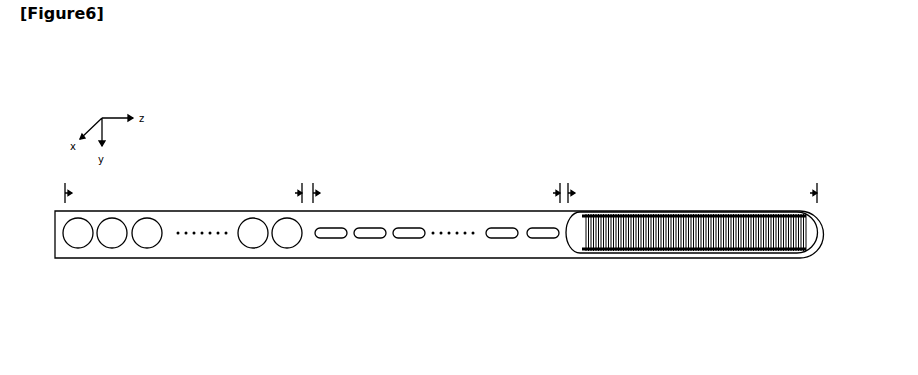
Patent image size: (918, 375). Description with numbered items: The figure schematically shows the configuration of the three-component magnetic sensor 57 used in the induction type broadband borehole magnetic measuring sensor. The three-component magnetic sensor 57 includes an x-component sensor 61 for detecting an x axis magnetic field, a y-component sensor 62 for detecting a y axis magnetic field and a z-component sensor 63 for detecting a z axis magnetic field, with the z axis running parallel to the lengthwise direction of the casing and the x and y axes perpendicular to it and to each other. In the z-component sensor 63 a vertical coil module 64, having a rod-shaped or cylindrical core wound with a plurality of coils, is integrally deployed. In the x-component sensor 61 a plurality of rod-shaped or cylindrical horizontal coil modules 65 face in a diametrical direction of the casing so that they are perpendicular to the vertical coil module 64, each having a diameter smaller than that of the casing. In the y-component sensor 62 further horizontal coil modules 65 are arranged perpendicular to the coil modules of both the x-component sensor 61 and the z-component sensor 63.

The 3-component magnetic sensor 57 is at (527, 115).
The x-component sensor 61 is at (192, 271).
The y-component sensor 62 is at (445, 271).
The z-component sensor 63 is at (700, 271).
The vertical coil module 64 is at (460, 234).
The horizontal coil modules 65 is at (290, 273).